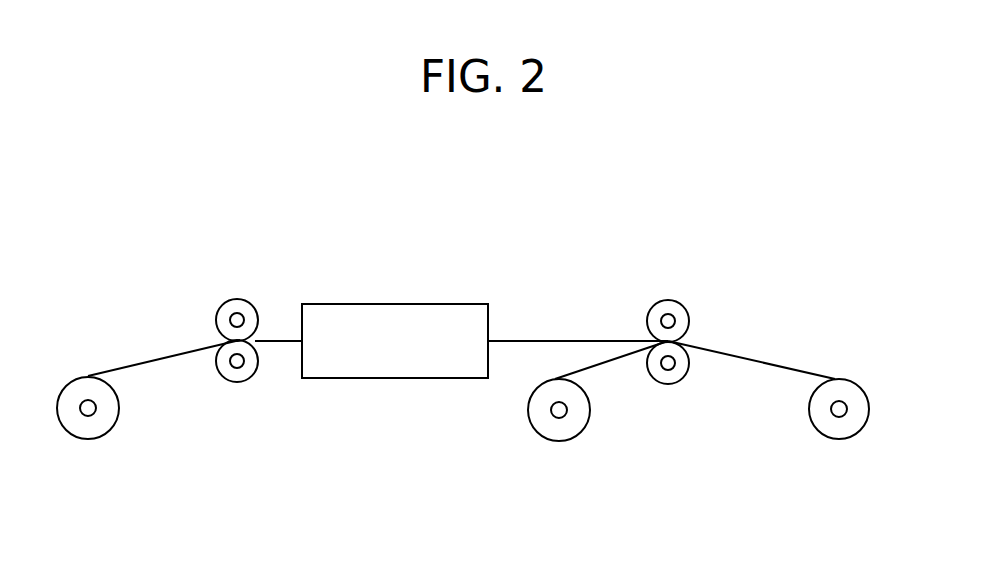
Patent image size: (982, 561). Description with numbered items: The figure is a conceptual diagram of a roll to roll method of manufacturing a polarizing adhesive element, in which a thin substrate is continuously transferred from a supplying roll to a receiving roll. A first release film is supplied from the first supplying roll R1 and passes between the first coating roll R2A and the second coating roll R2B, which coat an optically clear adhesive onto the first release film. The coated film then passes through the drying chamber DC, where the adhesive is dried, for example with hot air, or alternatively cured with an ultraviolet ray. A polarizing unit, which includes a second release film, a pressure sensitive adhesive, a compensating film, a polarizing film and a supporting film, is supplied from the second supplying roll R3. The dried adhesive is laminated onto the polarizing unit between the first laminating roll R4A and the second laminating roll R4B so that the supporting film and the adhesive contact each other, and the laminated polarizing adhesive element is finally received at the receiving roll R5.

The first supplying roll R1 is at (88, 439).
The first coating roll R2A is at (238, 382).
The second coating roll R2B is at (235, 299).
The drying chamber DC is at (386, 303).
The first laminating roll R4A is at (667, 384).
The second laminating roll R4B is at (665, 300).
The second supplying roll R3 is at (555, 441).
The receiving roll R5 is at (837, 440).